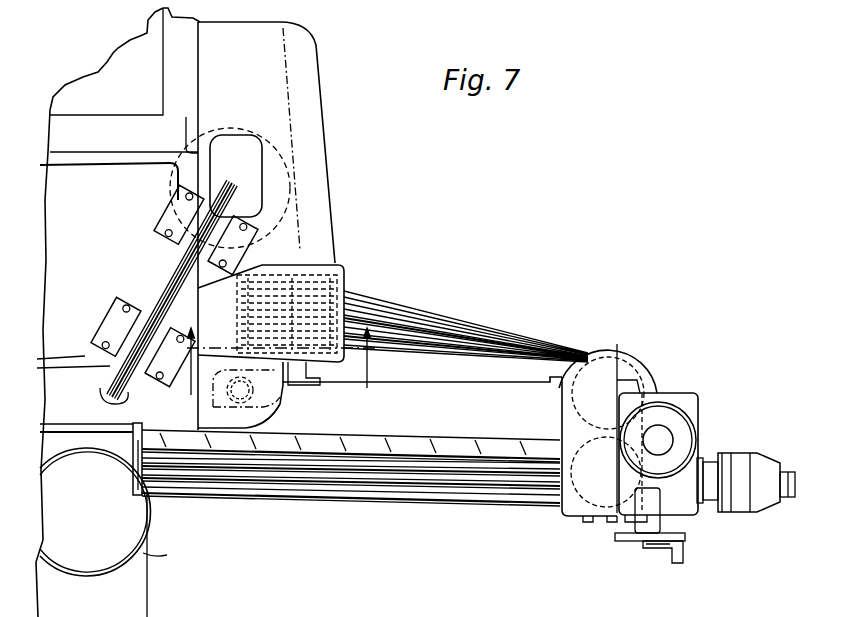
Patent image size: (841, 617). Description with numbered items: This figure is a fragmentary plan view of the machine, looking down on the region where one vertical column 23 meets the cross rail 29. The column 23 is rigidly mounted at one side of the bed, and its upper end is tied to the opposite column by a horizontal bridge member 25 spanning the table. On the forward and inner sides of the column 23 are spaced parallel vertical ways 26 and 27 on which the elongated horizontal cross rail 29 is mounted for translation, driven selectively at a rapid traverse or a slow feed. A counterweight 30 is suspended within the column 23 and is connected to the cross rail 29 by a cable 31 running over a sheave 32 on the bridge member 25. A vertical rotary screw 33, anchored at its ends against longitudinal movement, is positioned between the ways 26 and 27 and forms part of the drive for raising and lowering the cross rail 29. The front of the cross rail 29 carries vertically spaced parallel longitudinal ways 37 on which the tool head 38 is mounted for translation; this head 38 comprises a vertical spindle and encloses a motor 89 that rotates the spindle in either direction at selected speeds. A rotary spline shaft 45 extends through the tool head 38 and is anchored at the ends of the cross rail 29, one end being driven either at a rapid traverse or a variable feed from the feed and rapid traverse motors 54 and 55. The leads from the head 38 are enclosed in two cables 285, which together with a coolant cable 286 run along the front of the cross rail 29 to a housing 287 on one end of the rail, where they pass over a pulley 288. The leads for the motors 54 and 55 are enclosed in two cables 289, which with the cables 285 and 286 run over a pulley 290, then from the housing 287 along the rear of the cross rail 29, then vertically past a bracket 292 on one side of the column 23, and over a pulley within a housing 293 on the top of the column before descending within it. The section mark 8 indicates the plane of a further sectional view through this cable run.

The vertical column 23 is at (318, 152).
The horizontal bridge member 25 is at (93, 155).
The vertical way 26 is at (305, 382).
The vertical way 27 is at (205, 407).
The cross rail 29 is at (452, 393).
The counterweight 30 is at (250, 128).
The cable 31 is at (180, 279).
The sheave 32 is at (162, 331).
The vertical rotary screw 33 is at (251, 388).
The longitudinal ways 37 is at (463, 451).
The tool head 38 is at (72, 559).
The rotary spline shaft 45 is at (442, 481).
The feed motor 54 is at (680, 434).
The rapid traverse motor 55 is at (740, 462).
The motor 89 is at (93, 556).
The cables 285 is at (453, 343).
The coolant cable 286 is at (432, 349).
The housing 287 is at (587, 509).
The pulley 288 is at (566, 429).
The cables 289 is at (393, 313).
The pulley 290 is at (645, 371).
The bracket 292 is at (288, 275).
The housing 293 is at (343, 268).
The section line 8 is at (278, 366).